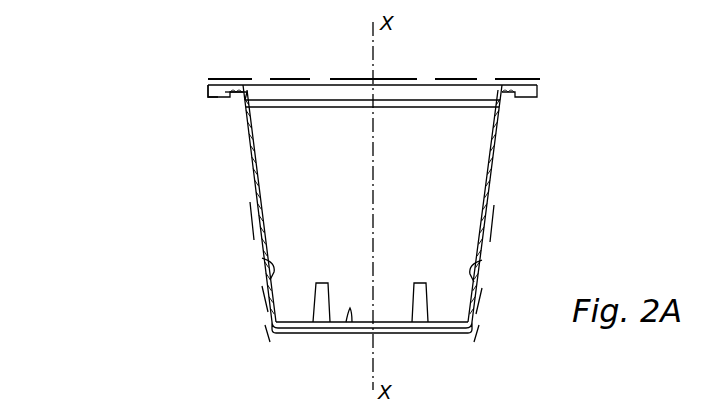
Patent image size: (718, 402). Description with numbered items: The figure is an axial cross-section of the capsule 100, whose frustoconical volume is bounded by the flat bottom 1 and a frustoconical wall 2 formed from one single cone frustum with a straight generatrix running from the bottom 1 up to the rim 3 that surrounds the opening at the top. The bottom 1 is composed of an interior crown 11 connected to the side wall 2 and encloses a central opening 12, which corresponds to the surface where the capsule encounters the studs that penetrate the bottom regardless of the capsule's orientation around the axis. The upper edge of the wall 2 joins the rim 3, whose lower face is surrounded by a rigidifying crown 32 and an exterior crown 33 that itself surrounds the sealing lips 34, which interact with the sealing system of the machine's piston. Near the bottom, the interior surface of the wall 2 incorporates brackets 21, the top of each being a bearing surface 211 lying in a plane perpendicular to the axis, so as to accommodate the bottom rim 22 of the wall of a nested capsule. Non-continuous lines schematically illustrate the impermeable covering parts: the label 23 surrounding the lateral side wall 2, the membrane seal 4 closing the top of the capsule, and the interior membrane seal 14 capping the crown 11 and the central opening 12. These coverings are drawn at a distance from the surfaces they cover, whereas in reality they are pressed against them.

The capsule 100 is at (128, 100).
The bottom 1 is at (305, 355).
The frustoconical wall 2 is at (270, 181).
The rim 3 is at (525, 100).
The membrane seal 4 is at (455, 78).
The interior crown 11 is at (472, 336).
The central opening 12 is at (392, 330).
The interior membrane seal 14 is at (348, 326).
The brackets 21 is at (262, 296).
The bottom rim 22 is at (268, 333).
The label 23 is at (250, 215).
The rigidifying crown 32 is at (243, 115).
The exterior crown 33 is at (208, 94).
The sealing lips 34 is at (230, 98).
The bearing surface 211 is at (265, 268).